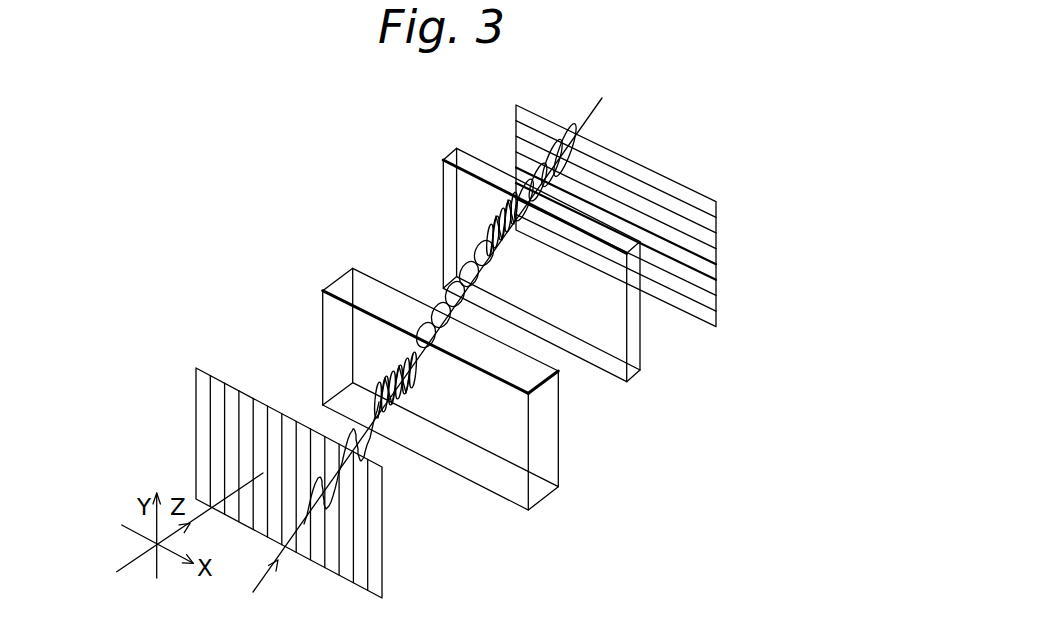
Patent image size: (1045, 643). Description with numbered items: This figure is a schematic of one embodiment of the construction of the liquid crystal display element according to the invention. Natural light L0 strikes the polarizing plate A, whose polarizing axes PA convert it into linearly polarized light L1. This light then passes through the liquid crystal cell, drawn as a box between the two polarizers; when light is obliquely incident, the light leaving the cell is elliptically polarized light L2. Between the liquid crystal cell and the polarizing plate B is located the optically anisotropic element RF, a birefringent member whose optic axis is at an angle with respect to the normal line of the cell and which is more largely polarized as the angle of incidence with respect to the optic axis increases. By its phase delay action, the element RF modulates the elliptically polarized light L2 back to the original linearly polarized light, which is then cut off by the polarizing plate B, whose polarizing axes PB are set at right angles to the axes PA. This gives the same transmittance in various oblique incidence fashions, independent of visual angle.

The polarizing axes PA is at (230, 403).
The polarizing axes PB is at (630, 170).
The polarizing plate A is at (375, 538).
The polarizing plate B is at (513, 146).
The optically anisotropic element RF is at (635, 337).
The natural light L0 is at (416, 361).
The linearly polarized light L1 is at (366, 450).
The elliptically polarized light L2 is at (438, 298).